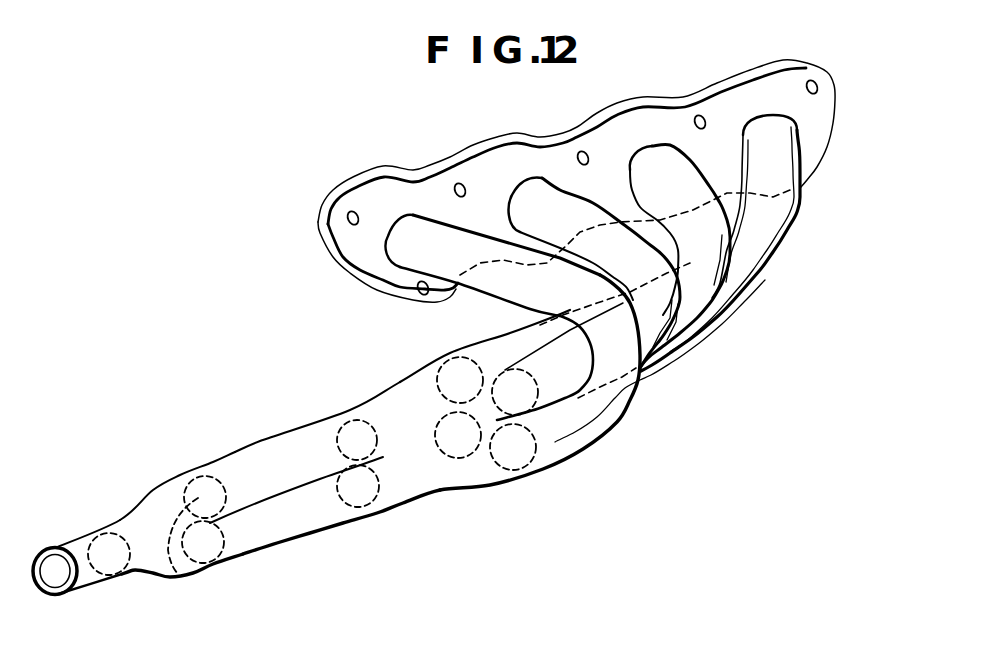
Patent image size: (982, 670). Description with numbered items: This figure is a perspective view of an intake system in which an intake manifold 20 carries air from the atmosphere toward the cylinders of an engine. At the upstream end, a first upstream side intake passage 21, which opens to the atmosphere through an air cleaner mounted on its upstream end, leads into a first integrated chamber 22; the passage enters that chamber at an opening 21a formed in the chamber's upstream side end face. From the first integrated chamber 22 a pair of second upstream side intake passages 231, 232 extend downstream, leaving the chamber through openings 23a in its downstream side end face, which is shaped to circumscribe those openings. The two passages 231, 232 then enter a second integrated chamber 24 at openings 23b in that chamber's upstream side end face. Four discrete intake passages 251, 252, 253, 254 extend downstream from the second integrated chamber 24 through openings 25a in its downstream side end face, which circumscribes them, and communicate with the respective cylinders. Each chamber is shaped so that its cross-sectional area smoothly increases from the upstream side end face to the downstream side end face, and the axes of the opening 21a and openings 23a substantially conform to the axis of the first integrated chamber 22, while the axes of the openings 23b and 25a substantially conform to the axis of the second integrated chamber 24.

The intake manifold 20 is at (812, 200).
The first upstream side intake passage 21 is at (78, 543).
The opening 21a is at (108, 573).
The first integrated chamber 22 is at (153, 512).
The second upstream side intake passage 231 is at (260, 457).
The second upstream side intake passage 232 is at (297, 517).
The openings 23a is at (194, 567).
The openings 23b is at (378, 447).
The second integrated chamber 24 is at (403, 407).
The openings 25a is at (456, 357).
The discrete intake passage 251 is at (433, 233).
The discrete intake passage 252 is at (557, 200).
The discrete intake passage 253 is at (687, 187).
The discrete intake passage 254 is at (783, 140).